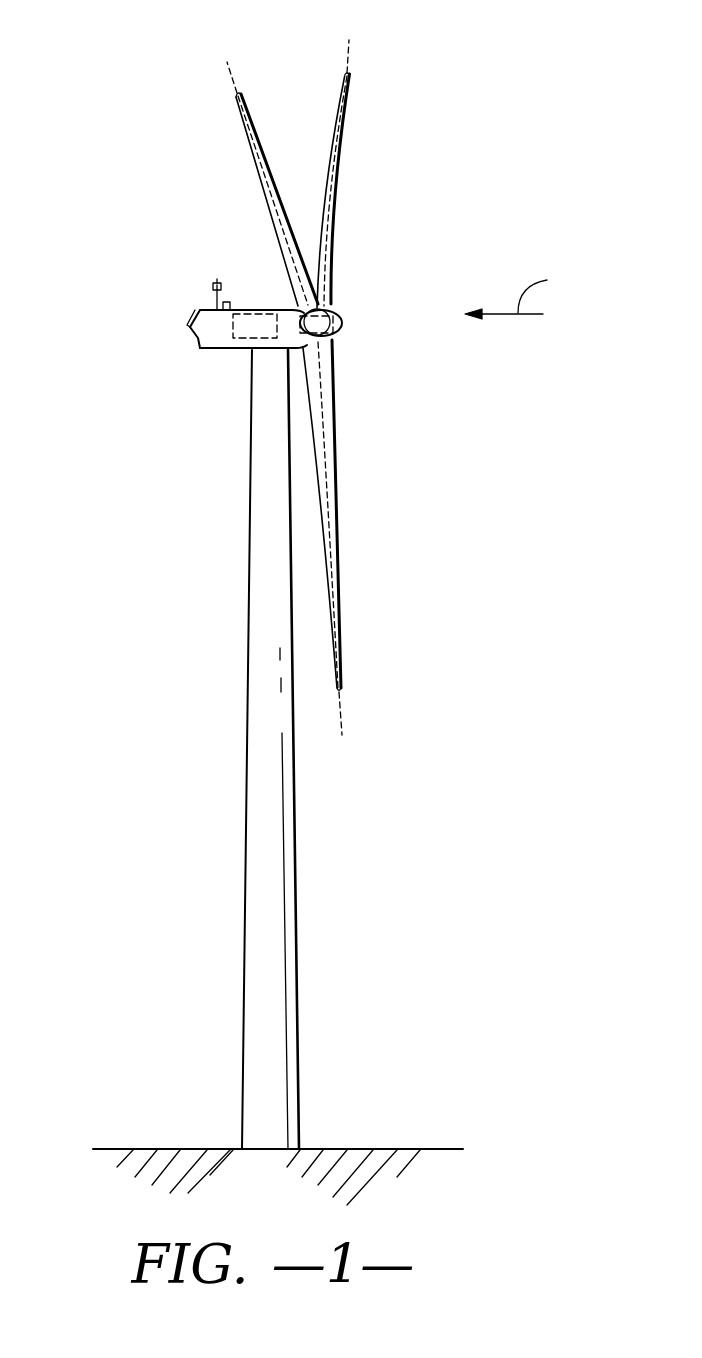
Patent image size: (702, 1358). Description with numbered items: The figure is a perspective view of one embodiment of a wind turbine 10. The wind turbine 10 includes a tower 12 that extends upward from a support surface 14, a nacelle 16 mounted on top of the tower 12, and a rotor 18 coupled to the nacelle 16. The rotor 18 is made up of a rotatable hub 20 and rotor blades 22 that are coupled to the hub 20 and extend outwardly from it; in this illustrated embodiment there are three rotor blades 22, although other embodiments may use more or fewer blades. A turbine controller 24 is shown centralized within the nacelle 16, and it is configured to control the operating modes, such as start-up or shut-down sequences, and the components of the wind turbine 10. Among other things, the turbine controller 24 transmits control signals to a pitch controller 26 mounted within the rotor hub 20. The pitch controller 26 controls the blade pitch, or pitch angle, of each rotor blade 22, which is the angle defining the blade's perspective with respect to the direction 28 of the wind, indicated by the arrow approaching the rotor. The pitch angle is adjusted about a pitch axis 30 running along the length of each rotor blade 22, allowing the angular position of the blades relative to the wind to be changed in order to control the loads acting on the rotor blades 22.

The wind turbine 10 is at (335, 578).
The tower 12 is at (258, 857).
The support surface 14 is at (172, 1148).
The nacelle 16 is at (290, 317).
The rotor 18 is at (300, 391).
The rotatable hub 20 is at (335, 333).
The rotor blade 22 is at (337, 115).
The turbine controller 24 is at (258, 308).
The pitch controller 26 is at (340, 320).
The direction of the wind 28 is at (528, 293).
The pitch axis 30 is at (232, 78).